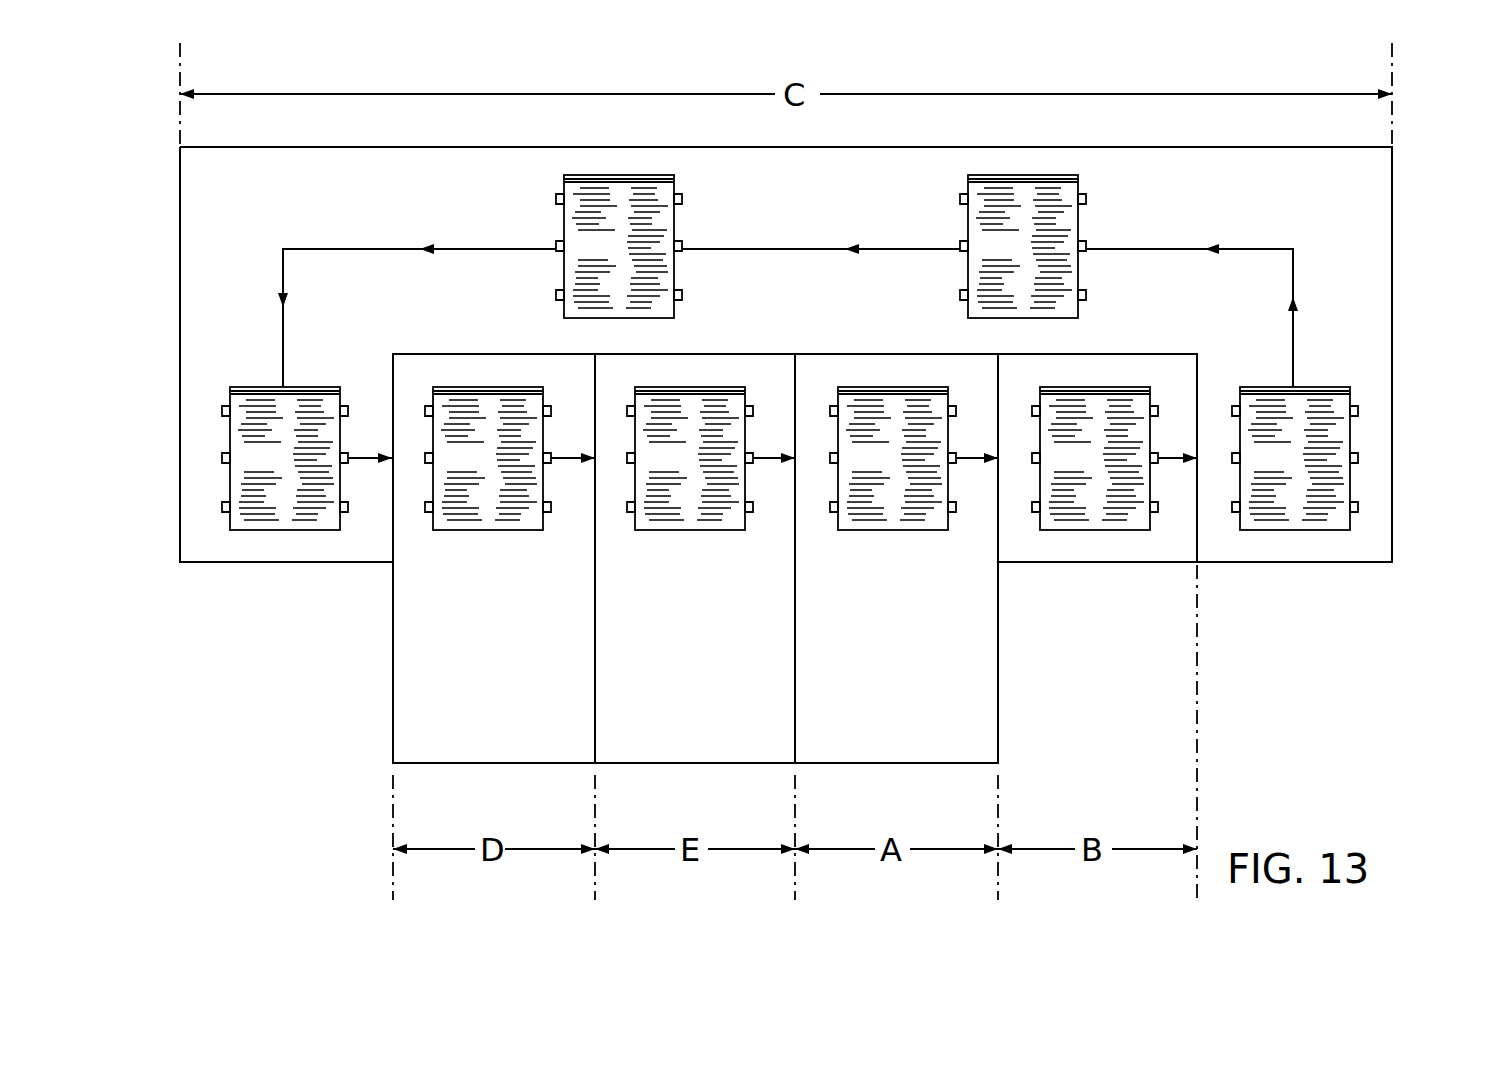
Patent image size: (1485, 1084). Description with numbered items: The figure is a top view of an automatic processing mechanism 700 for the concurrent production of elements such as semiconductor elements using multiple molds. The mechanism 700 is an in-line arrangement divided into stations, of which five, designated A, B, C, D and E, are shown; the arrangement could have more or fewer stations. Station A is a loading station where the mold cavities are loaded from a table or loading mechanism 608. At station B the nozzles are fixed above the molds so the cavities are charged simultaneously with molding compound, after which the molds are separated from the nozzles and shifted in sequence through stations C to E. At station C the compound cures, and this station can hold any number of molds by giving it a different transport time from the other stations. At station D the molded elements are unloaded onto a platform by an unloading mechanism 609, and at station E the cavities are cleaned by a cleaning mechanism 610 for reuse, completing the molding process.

The automatic processing mechanism 700 is at (1465, 303).
The unloading mechanism 609 is at (517, 693).
The cleaning mechanism 610 is at (718, 693).
The loading mechanism 608 is at (925, 693).